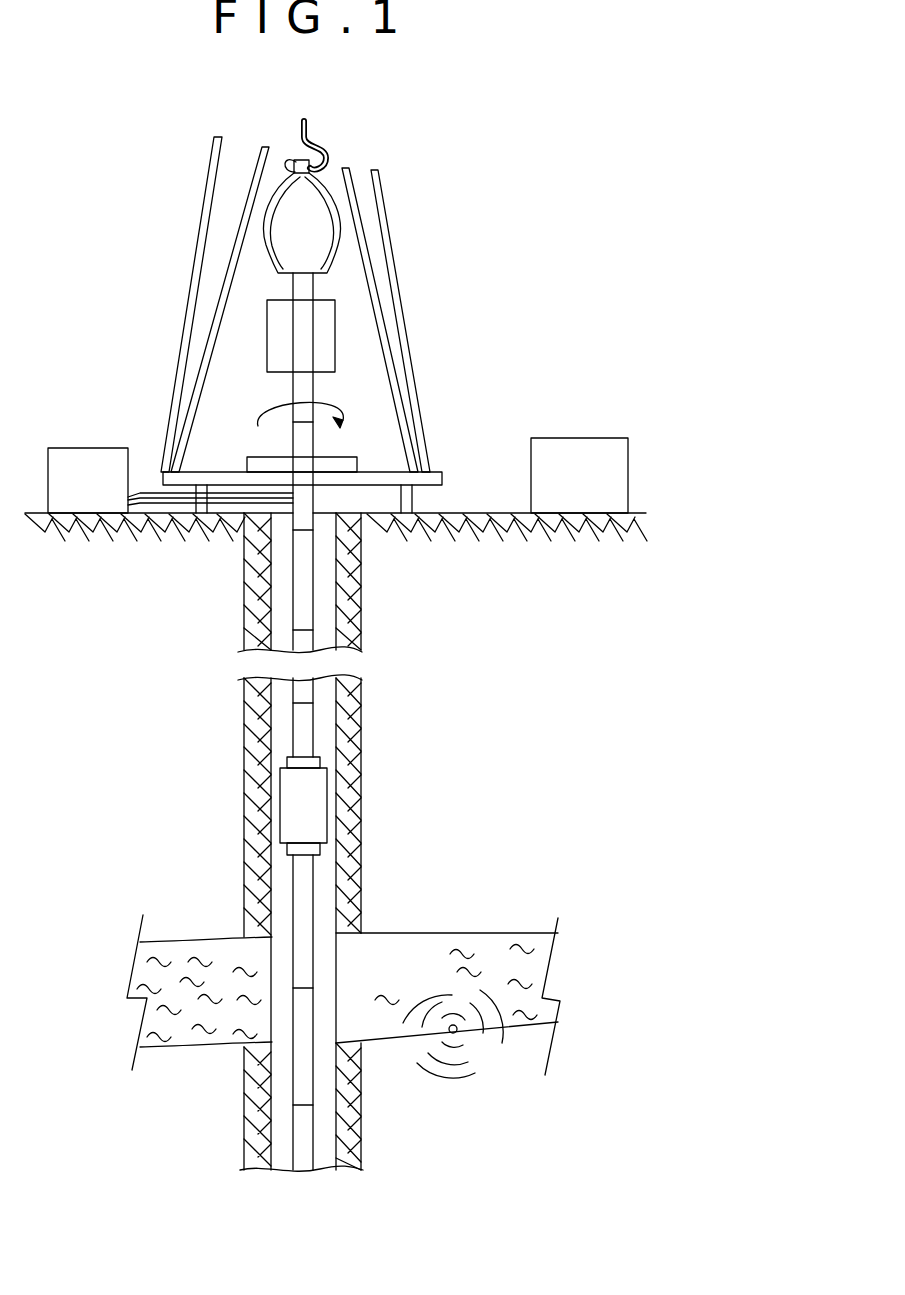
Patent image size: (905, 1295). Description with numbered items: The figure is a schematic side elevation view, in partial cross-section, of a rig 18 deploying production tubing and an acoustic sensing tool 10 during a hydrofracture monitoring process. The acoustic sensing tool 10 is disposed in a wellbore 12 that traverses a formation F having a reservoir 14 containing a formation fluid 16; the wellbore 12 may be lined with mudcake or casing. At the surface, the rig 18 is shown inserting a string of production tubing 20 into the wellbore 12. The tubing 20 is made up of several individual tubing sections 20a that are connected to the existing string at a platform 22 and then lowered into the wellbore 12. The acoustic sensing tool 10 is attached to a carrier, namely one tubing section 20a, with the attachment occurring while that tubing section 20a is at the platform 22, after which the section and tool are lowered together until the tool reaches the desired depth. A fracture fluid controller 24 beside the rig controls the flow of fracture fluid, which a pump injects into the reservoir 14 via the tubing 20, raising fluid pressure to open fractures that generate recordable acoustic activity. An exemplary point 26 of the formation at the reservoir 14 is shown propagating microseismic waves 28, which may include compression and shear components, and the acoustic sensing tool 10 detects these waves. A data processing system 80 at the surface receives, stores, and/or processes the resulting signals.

The acoustic sensing tool 10 is at (330, 805).
The wellbore 12 is at (338, 592).
The reservoir 14 is at (412, 979).
The formation fluid 16 is at (520, 963).
The rig 18 is at (403, 301).
The production tubing 20 is at (317, 502).
The tubing section 20a is at (300, 730).
The platform 22 is at (347, 462).
The fracture fluid controller 24 is at (87, 460).
The formation point 26 is at (456, 1032).
The microseismic waves 28 is at (437, 990).
The data processing system 80 is at (583, 450).
The formation F is at (112, 750).